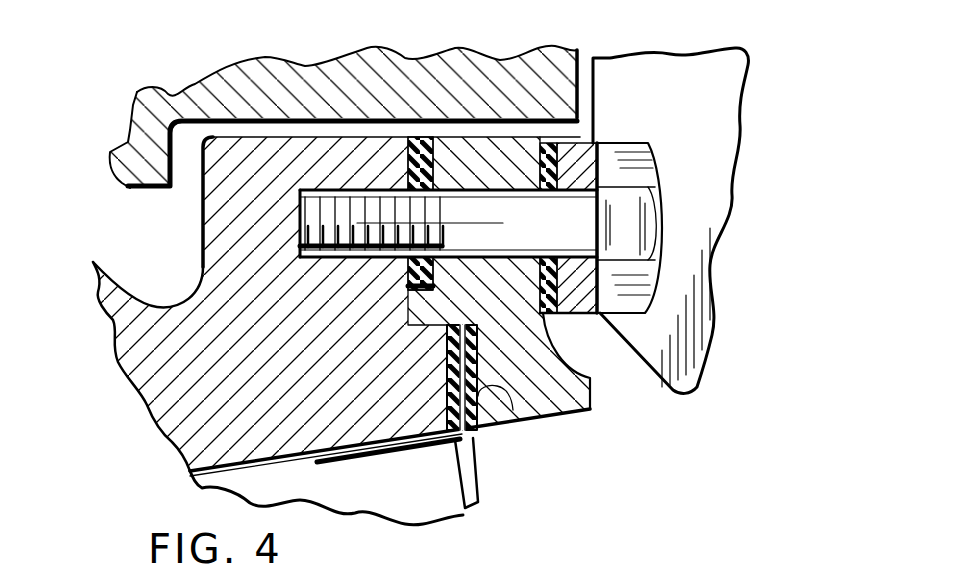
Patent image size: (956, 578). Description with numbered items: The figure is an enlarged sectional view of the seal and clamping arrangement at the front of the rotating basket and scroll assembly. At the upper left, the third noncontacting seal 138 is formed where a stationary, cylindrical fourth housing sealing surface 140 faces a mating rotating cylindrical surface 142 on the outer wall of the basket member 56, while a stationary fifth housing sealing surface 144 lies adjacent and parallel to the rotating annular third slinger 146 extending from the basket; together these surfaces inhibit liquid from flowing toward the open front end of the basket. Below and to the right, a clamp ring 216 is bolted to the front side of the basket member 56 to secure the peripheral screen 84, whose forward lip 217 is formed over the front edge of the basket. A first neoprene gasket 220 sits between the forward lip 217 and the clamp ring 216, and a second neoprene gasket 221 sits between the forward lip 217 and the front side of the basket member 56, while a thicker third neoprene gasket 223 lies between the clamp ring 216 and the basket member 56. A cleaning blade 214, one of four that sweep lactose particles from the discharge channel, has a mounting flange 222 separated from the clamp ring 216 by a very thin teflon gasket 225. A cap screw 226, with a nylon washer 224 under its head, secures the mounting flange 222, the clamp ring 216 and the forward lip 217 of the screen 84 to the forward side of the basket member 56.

The basket member 56 is at (200, 455).
The screen 84 is at (400, 457).
The third noncontacting seal 138 is at (78, 236).
The fourth housing sealing surface 140 is at (247, 118).
The rotating cylindrical surface 142 is at (303, 140).
The fifth housing sealing surface 144 is at (122, 180).
The third slinger 146 is at (93, 262).
The cleaning blade 214 is at (725, 182).
The clamp ring 216 is at (590, 412).
The forward lip 217 is at (513, 410).
The first neoprene gasket 220 is at (468, 428).
The second neoprene gasket 221 is at (464, 506).
The mounting flange 222 is at (652, 160).
The third neoprene gasket 223 is at (422, 140).
The nylon washer 224 is at (595, 140).
The teflon gasket 225 is at (556, 322).
The cap screw 226 is at (576, 238).